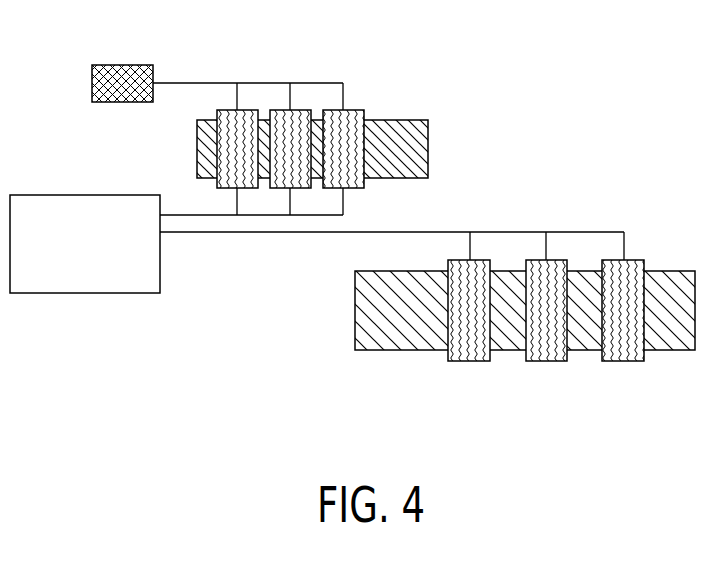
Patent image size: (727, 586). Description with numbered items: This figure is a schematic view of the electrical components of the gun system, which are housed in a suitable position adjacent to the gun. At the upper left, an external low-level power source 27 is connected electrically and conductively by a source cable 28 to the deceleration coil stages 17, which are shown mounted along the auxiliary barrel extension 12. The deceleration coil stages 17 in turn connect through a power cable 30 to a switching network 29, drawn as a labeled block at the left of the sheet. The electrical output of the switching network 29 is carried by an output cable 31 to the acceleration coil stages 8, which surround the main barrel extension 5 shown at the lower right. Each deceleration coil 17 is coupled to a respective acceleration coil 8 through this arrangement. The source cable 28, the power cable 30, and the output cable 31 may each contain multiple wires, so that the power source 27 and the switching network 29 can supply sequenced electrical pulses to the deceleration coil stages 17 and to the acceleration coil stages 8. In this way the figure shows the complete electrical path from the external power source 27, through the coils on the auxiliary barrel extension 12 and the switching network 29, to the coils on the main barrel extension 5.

The main barrel extension 5 is at (665, 282).
The acceleration coil stages 8 is at (628, 272).
The auxiliary barrel extension 12 is at (380, 130).
The deceleration coil stages 17 is at (349, 116).
The external low-level power source 27 is at (128, 64).
The source cable 28 is at (208, 83).
The switching network 29 is at (100, 195).
The power cable 30 is at (344, 193).
The output cable 31 is at (253, 233).